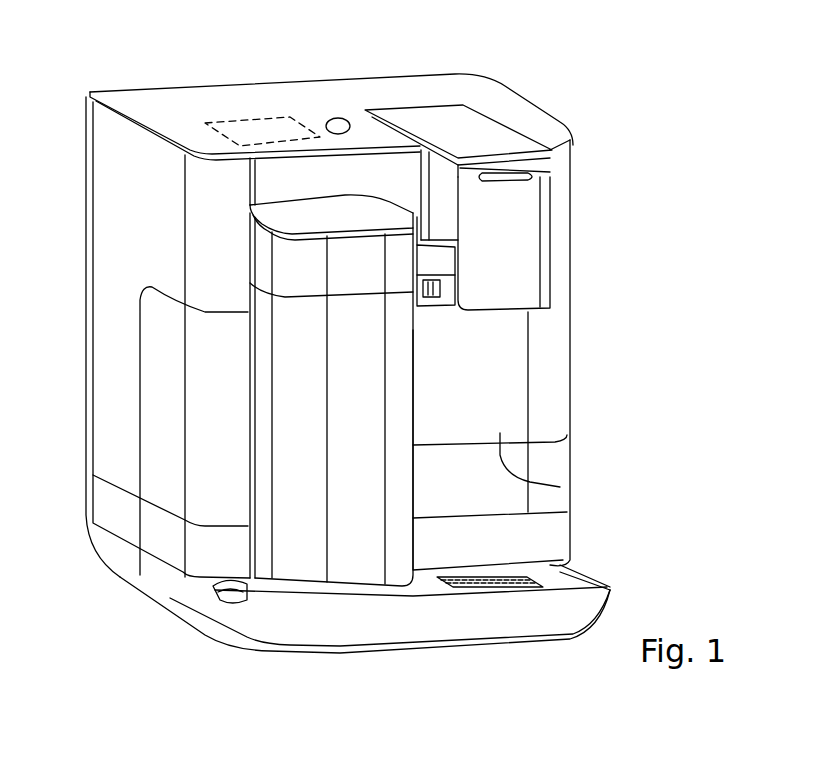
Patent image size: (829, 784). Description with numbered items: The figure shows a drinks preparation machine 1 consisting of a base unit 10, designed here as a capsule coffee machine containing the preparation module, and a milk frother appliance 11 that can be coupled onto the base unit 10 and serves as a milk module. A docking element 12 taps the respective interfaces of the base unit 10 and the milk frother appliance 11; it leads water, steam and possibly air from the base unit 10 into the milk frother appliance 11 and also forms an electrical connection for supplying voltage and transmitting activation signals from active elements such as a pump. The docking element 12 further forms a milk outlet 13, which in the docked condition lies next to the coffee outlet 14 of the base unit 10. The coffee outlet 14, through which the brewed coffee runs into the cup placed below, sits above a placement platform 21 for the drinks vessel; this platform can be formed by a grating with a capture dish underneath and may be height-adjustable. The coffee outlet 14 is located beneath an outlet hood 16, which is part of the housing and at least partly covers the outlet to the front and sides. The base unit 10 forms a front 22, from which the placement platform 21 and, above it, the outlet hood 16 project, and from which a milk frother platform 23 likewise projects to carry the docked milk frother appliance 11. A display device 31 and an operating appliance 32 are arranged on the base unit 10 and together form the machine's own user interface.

The drinks preparation machine 1 is at (633, 247).
The base unit 10 is at (528, 402).
The milk frother appliance 11 is at (293, 407).
The docking element 12 is at (430, 226).
The milk outlet 13 is at (428, 290).
The coffee outlet 14 is at (500, 315).
The outlet hood 16 is at (508, 267).
The placement platform 21 is at (565, 564).
The front 22 is at (560, 487).
The milk frother platform 23 is at (218, 597).
The display device 31 is at (267, 130).
The operating appliance 32 is at (327, 120).